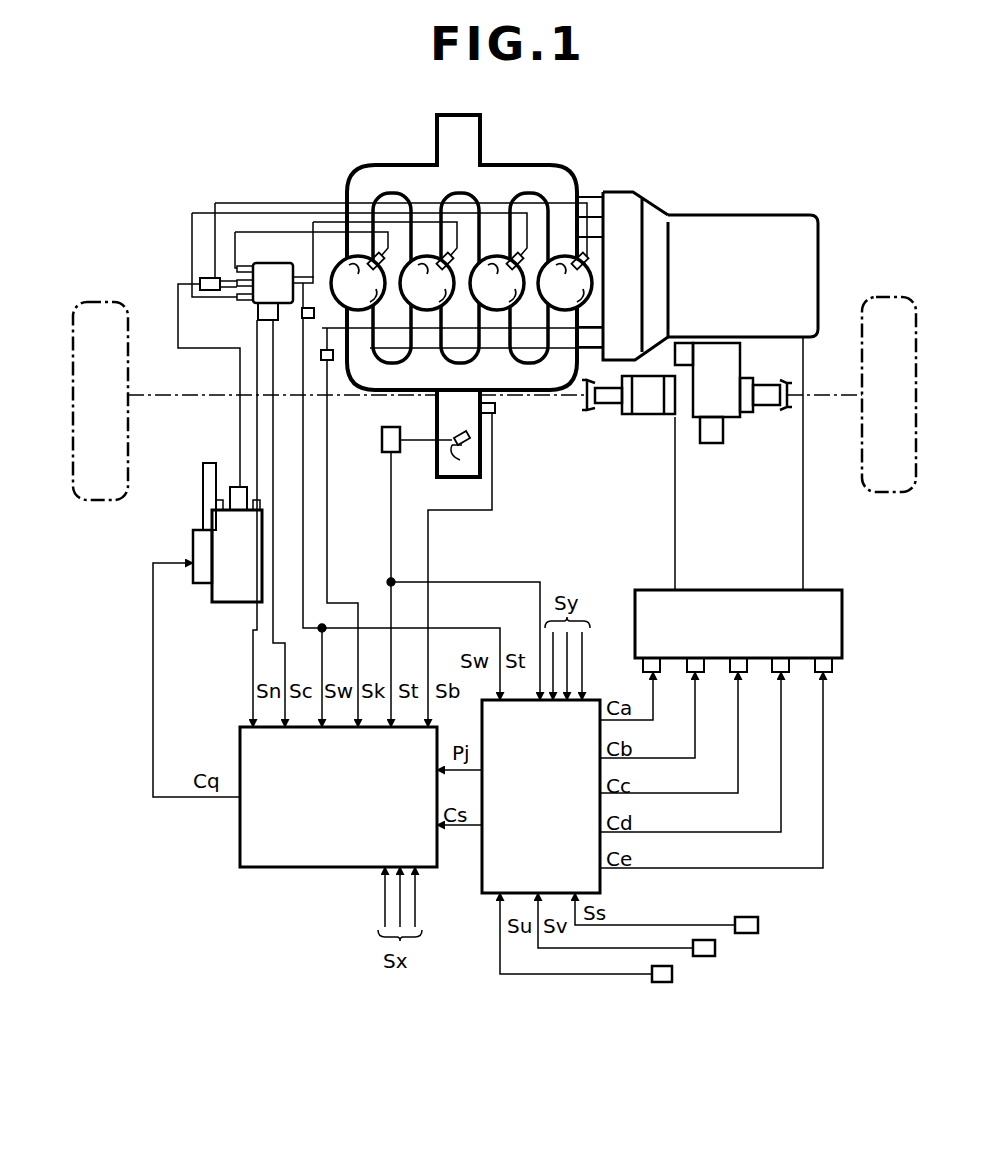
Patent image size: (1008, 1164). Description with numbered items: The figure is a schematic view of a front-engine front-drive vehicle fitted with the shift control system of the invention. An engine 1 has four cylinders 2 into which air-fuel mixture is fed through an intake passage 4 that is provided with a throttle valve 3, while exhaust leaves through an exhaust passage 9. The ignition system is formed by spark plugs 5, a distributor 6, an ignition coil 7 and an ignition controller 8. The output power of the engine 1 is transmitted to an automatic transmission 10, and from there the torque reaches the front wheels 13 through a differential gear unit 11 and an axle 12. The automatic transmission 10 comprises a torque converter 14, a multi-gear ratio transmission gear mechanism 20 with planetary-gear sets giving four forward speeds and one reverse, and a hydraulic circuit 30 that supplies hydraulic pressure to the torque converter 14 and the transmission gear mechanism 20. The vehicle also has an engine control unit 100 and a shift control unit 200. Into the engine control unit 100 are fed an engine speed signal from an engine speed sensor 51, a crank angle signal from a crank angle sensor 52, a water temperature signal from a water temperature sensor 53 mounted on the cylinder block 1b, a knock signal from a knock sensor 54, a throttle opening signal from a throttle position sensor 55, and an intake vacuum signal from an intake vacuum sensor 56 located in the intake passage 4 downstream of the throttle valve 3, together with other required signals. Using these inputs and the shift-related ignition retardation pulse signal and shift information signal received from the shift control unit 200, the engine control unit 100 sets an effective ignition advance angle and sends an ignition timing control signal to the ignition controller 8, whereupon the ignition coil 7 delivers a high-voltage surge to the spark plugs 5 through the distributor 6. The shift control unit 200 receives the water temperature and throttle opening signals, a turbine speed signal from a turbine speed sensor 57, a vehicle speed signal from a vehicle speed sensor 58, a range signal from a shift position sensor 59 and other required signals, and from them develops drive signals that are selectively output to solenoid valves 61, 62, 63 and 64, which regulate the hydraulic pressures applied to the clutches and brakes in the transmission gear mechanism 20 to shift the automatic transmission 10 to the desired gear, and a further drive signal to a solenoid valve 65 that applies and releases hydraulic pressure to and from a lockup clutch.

The engine 1 is at (341, 188).
The cylinder block 1b is at (597, 225).
The cylinders 2 is at (360, 311).
The throttle valve 3 is at (455, 445).
The intake passage 4 is at (467, 412).
The spark plugs 5 is at (461, 281).
The distributor 6 is at (283, 305).
The ignition coil 7 is at (243, 585).
The ignition controller 8 is at (205, 585).
The exhaust passage 9 is at (471, 159).
The automatic transmission 10 is at (711, 251).
The differential gear unit 11 is at (733, 420).
The axle 12 is at (591, 405).
The front wheels 13 is at (128, 460).
The torque converter 14 is at (628, 225).
The transmission gear mechanism 20 is at (720, 245).
The hydraulic circuit 30 is at (843, 618).
The engine speed sensor 51 is at (258, 313).
The crank angle sensor 52 is at (290, 320).
The water temperature sensor 53 is at (307, 307).
The knock sensor 54 is at (329, 362).
The throttle position sensor 55 is at (382, 440).
The intake vacuum sensor 56 is at (496, 411).
The turbine speed sensor 57 is at (673, 978).
The vehicle speed sensor 58 is at (716, 950).
The shift position sensor 59 is at (759, 925).
The solenoid valve 61 is at (661, 673).
The solenoid valve 62 is at (704, 673).
The solenoid valve 63 is at (747, 673).
The solenoid valve 64 is at (790, 673).
The solenoid valve 65 is at (833, 673).
The engine control unit 100 is at (272, 867).
The shift control unit 200 is at (603, 887).